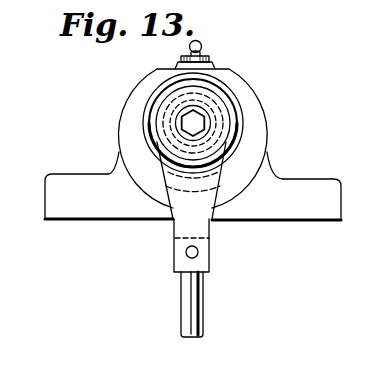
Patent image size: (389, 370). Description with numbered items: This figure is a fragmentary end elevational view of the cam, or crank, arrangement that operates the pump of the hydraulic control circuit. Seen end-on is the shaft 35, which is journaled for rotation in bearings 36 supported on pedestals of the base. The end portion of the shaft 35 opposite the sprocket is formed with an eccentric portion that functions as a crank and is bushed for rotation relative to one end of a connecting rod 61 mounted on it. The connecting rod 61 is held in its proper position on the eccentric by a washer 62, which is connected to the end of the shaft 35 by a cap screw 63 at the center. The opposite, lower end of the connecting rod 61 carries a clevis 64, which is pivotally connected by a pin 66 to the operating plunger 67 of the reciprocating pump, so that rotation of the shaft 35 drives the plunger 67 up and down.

The shaft 35 is at (235, 143).
The bearings 36 is at (255, 111).
The connecting rod 61 is at (208, 168).
The washer 62 is at (223, 112).
The cap screw 63 is at (183, 120).
The clevis 64 is at (196, 232).
The pin 66 is at (187, 257).
The operating plunger 67 is at (188, 292).